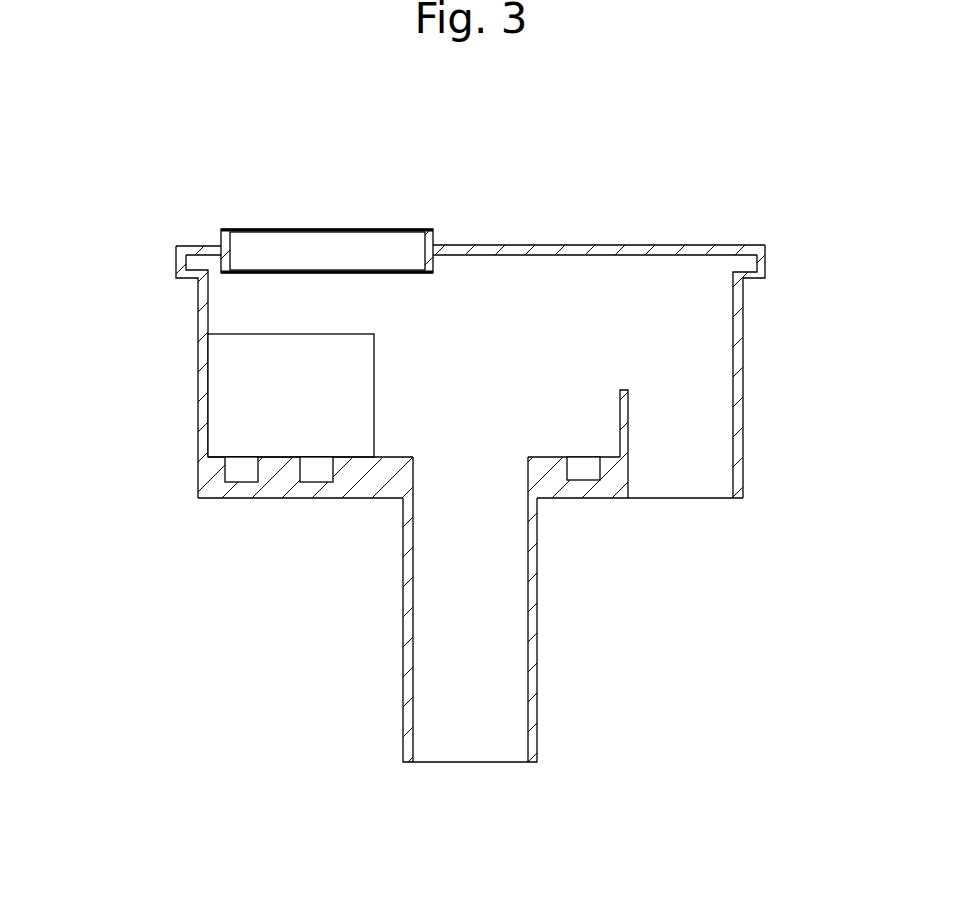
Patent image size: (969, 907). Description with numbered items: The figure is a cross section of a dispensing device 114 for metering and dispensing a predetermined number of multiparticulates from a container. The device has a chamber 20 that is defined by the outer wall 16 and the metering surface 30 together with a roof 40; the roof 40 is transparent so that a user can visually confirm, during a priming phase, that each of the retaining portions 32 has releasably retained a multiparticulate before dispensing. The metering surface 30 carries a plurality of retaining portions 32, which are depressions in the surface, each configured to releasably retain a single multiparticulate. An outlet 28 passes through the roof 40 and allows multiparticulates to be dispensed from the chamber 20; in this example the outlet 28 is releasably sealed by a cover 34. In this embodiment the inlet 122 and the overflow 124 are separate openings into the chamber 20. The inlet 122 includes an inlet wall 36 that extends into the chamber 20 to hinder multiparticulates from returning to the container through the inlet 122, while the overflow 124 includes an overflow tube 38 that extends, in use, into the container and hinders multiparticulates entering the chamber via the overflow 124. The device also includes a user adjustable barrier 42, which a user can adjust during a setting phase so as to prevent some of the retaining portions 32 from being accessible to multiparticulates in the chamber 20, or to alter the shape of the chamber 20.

The dispensing device 114 is at (132, 183).
The outer wall 16 is at (740, 350).
The chamber 20 is at (666, 293).
The outlet 28 is at (270, 253).
The metering surface 30 is at (357, 482).
The retaining portions 32 is at (315, 468).
The cover 34 is at (367, 228).
The inlet wall 36 is at (623, 410).
The overflow tube 38 is at (532, 697).
The roof 40 is at (495, 250).
The user adjustable barrier 42 is at (250, 387).
The inlet 122 is at (685, 473).
The overflow 124 is at (472, 475).